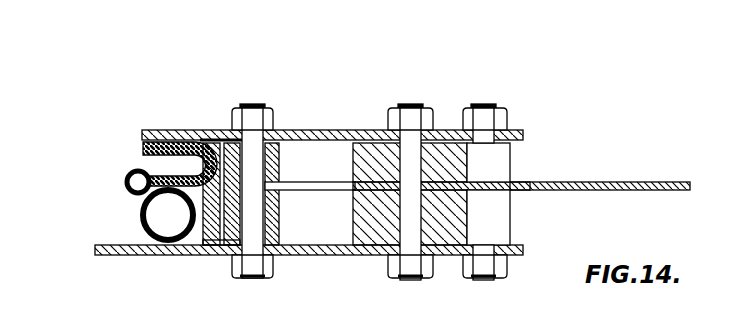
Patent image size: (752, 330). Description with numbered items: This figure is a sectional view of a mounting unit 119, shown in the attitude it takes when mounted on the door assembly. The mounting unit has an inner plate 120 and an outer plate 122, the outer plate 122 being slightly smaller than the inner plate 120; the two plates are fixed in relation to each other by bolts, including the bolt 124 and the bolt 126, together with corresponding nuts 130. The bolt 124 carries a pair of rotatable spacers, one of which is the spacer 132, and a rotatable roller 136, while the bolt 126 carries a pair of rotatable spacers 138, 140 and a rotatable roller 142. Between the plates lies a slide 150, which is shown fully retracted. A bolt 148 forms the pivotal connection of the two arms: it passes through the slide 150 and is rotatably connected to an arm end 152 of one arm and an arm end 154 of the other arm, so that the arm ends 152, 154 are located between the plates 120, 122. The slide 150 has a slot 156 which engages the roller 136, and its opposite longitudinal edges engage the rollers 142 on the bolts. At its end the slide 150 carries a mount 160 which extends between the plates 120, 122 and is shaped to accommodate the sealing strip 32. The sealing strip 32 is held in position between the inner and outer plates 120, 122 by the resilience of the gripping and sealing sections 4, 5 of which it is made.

The mounting unit 119 is at (130, 127).
The inner plate 120 is at (163, 130).
The outer plate 122 is at (160, 256).
The bolt 124 is at (248, 105).
The nuts 130 is at (268, 110).
The rotatable roller 136 is at (232, 143).
The rotatable spacer 132 is at (289, 142).
The slot 156 is at (319, 184).
The slide 150 is at (690, 184).
The rotatable roller 142 is at (525, 191).
The arm end 152 is at (380, 158).
The arm end 154 is at (373, 230).
The bolt 148 is at (405, 105).
The bolt 126 is at (483, 105).
The rotatable spacer 138 is at (498, 163).
The rotatable spacer 140 is at (498, 218).
The mount 160 is at (210, 257).
The gripping section 4 is at (146, 151).
The sealing section 5 is at (140, 220).
The sealing strip 32 is at (113, 190).